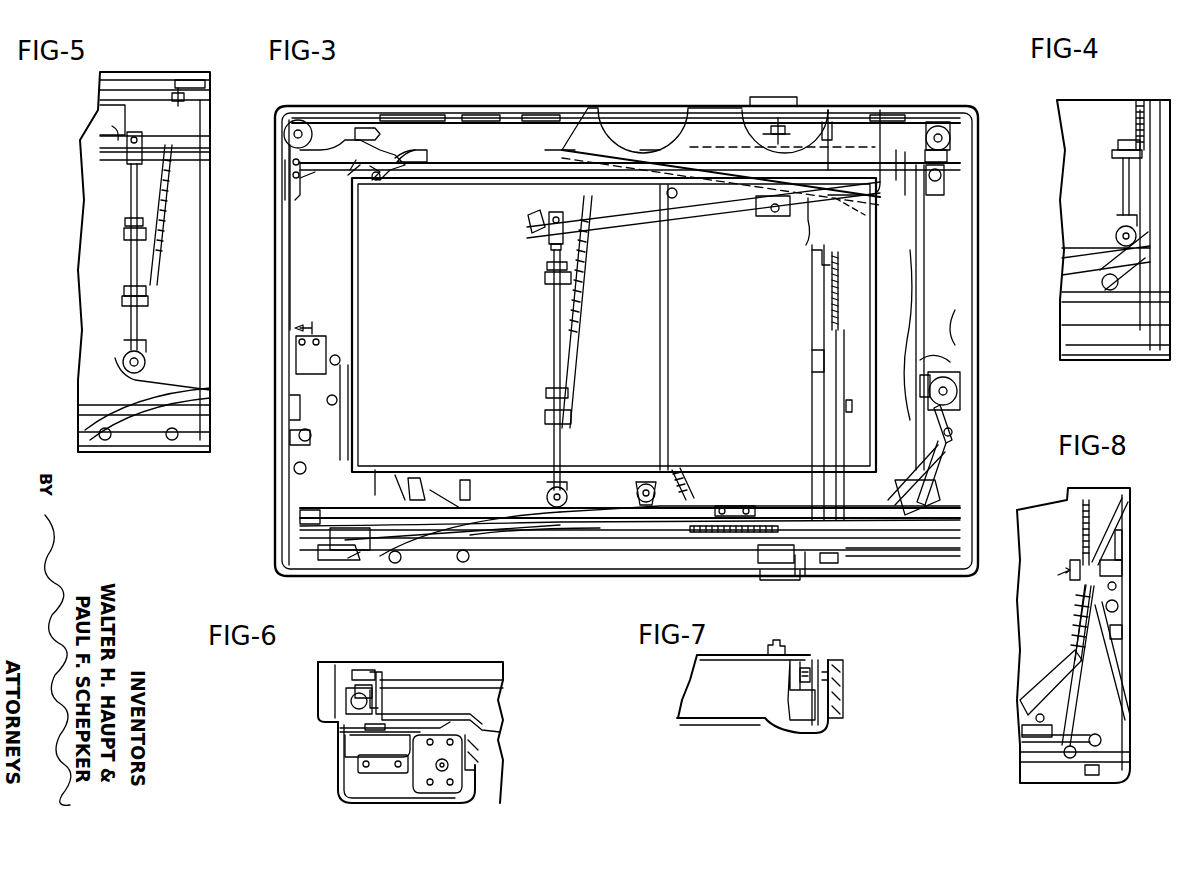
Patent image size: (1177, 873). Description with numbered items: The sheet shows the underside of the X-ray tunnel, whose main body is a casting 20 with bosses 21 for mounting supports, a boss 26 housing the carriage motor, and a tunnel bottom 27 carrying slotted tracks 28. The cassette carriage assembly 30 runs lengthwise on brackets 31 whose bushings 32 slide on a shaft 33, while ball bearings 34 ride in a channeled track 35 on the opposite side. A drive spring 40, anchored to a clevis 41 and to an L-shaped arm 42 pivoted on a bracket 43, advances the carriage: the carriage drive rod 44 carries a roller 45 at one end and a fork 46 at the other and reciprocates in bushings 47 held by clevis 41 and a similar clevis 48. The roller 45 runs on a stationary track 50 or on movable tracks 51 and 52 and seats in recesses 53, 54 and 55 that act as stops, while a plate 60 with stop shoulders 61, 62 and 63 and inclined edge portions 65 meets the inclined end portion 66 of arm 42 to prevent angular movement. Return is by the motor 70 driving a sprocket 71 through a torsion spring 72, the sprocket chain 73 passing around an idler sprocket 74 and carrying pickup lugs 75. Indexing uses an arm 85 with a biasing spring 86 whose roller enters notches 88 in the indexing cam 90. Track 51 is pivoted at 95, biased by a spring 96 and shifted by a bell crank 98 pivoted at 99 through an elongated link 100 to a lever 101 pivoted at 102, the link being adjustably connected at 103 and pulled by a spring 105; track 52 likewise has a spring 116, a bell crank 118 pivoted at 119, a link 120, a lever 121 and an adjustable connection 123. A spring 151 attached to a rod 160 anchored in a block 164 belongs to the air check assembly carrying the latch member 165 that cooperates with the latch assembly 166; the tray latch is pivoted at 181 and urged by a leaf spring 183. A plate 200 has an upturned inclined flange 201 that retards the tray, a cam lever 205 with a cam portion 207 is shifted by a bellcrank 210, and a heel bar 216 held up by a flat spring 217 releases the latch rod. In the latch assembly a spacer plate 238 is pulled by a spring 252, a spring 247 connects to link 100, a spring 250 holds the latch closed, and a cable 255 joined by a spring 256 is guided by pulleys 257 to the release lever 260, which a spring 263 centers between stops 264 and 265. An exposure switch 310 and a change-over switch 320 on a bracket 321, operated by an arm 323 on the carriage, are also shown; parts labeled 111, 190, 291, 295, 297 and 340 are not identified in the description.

In FIG. 3, the casting 20 is at (555, 110).
In FIG. 5, the casting 20 is at (203, 74).
In FIG. 4, the casting 20 is at (1140, 355).
In FIG. 8, the casting 20 is at (1130, 500).
In FIG. 6, the casting 20 is at (445, 660).
In FIG. 7, the casting 20 is at (830, 700).
In FIG. 3, the bosses 21 is at (780, 98).
In FIG. 6, the bosses 21 is at (330, 686).
In FIG. 7, the bosses 21 is at (845, 682).
In FIG. 6, the boss 26 is at (336, 786).
In FIG. 7, the tunnel bottom 27 is at (813, 660).
In FIG. 7, the slotted tracks 28 is at (775, 640).
In FIG. 3, the cassette carriage assembly 30 is at (536, 349).
In FIG. 5, the cassette carriage assembly 30 is at (205, 198).
In FIG. 4, the cassette carriage assembly 30 is at (1150, 132).
In FIG. 6, the cassette carriage assembly 30 is at (462, 688).
In FIG. 7, the cassette carriage assembly 30 is at (800, 705).
In FIG. 3, the brackets 31 is at (805, 576).
In FIG. 3, the bushings 32 is at (317, 377).
In FIG. 3, the shaft 33 is at (836, 565).
In FIG. 8, the shaft 33 is at (1085, 762).
In FIG. 6, the shaft 33 is at (350, 692).
In FIG. 3, the ball bearings 34 is at (775, 124).
In FIG. 5, the ball bearings 34 is at (176, 92).
In FIG. 7, the ball bearings 34 is at (804, 666).
In FIG. 3, the channeled track 35 is at (490, 123).
In FIG. 5, the channeled track 35 is at (210, 84).
In FIG. 7, the channeled track 35 is at (826, 675).
In FIG. 3, the drive spring 40 is at (588, 265).
In FIG. 5, the drive spring 40 is at (160, 222).
In FIG. 4, the drive spring 40 is at (1140, 100).
In FIG. 3, the clevis 41 is at (545, 418).
In FIG. 5, the clevis 41 is at (122, 300).
In FIG. 4, the clevis 41 is at (1118, 144).
In FIG. 3, the L-shaped arm 42 is at (532, 230).
In FIG. 5, the L-shaped arm 42 is at (205, 152).
In FIG. 3, the bracket 43 is at (740, 196).
In FIG. 3, the carriage drive rod 44 is at (553, 310).
In FIG. 5, the carriage drive rod 44 is at (130, 318).
In FIG. 4, the carriage drive rod 44 is at (1123, 178).
In FIG. 3, the roller 45 is at (547, 490).
In FIG. 5, the roller 45 is at (124, 355).
In FIG. 4, the roller 45 is at (1116, 232).
In FIG. 3, the fork 46 is at (556, 214).
In FIG. 5, the fork 46 is at (128, 150).
In FIG. 3, the bushings 47 is at (545, 278).
In FIG. 5, the bushings 47 is at (124, 234).
In FIG. 4, the bushings 47 is at (1112, 150).
In FIG. 3, the clevis 48 is at (547, 266).
In FIG. 5, the clevis 48 is at (126, 222).
In FIG. 3, the stationary track 50 is at (385, 550).
In FIG. 5, the stationary track 50 is at (95, 410).
In FIG. 4, the stationary track 50 is at (1118, 255).
In FIG. 3, the movable track 51 is at (450, 490).
In FIG. 5, the movable track 51 is at (128, 376).
In FIG. 4, the movable track 51 is at (1085, 290).
In FIG. 3, the movable track 52 is at (360, 560).
In FIG. 5, the movable track 52 is at (145, 440).
In FIG. 3, the recess 53 is at (350, 538).
In FIG. 3, the recess 54 is at (420, 476).
In FIG. 3, the recess 55 is at (362, 552).
In FIG. 3, the plate 60 is at (330, 142).
In FIG. 5, the plate 60 is at (103, 112).
In FIG. 3, the stop shoulder 61 is at (410, 160).
In FIG. 5, the stop shoulder 61 is at (112, 136).
In FIG. 3, the stop shoulder 62 is at (352, 172).
In FIG. 3, the stop shoulder 63 is at (300, 190).
In FIG. 3, the inclined edge portion 65 is at (412, 150).
In FIG. 3, the inclined end portion 66 is at (530, 215).
In FIG. 3, the motor 70 is at (935, 480).
In FIG. 8, the motor 70 is at (1046, 698).
In FIG. 6, the motor 70 is at (448, 782).
In FIG. 3, the sprocket 71 is at (862, 558).
In FIG. 8, the sprocket 71 is at (1022, 740).
In FIG. 6, the sprocket 71 is at (345, 728).
In FIG. 6, the torsion spring 72 is at (370, 730).
In FIG. 3, the sprocket chain 73 is at (402, 475).
In FIG. 3, the idler sprocket 74 is at (300, 516).
In FIG. 3, the pickup lugs 75 is at (378, 468).
In FIG. 3, the arm 85 is at (925, 368).
In FIG. 3, the biasing spring 86 is at (920, 385).
In FIG. 3, the notches 88 is at (962, 378).
In FIG. 3, the indexing cam 90 is at (958, 392).
In FIG. 8, the indexing cam 90 is at (1120, 606).
In FIG. 3, the pivot 95 is at (640, 485).
In FIG. 3, the spring 96 is at (668, 490).
In FIG. 3, the bell crank 98 is at (480, 540).
In FIG. 3, the pivot 99 is at (463, 562).
In FIG. 3, the elongated link 100 is at (620, 540).
In FIG. 5, the elongated link 100 is at (193, 435).
In FIG. 4, the elongated link 100 is at (1105, 328).
In FIG. 8, the elongated link 100 is at (1022, 755).
In FIG. 6, the elongated link 100 is at (360, 668).
In FIG. 8, the lever 101 is at (1090, 680).
In FIG. 6, the lever 101 is at (385, 676).
In FIG. 3, the pivot 102 is at (952, 435).
In FIG. 3, the adjustable connection 103 is at (762, 560).
In FIG. 3, the spring 105 is at (700, 534).
In FIG. 3, the stop 111 is at (853, 404).
In FIG. 3, the spring 116 is at (690, 475).
In FIG. 3, the bell crank 118 is at (340, 560).
In FIG. 3, the pivot 119 is at (398, 563).
In FIG. 3, the elongated link 120 is at (580, 545).
In FIG. 5, the elongated link 120 is at (85, 420).
In FIG. 4, the elongated link 120 is at (1064, 305).
In FIG. 8, the elongated link 120 is at (1022, 735).
In FIG. 6, the elongated link 120 is at (366, 684).
In FIG. 3, the lever 121 is at (912, 478).
In FIG. 8, the lever 121 is at (1075, 662).
In FIG. 6, the lever 121 is at (372, 700).
In FIG. 3, the adjustable connection 123 is at (742, 506).
In FIG. 3, the spring 151 is at (840, 286).
In FIG. 3, the rod 160 is at (815, 296).
In FIG. 3, the block 164 is at (812, 277).
In FIG. 3, the latch member 165 is at (817, 362).
In FIG. 8, the latch assembly 166 is at (1060, 566).
In FIG. 3, the pivot 181 is at (798, 214).
In FIG. 3, the leaf spring 183 is at (808, 202).
In FIG. 3, the latch plate 190 is at (370, 126).
In FIG. 3, the plate 200 is at (852, 120).
In FIG. 3, the upturned inclined flange 201 is at (864, 217).
In FIG. 3, the lever 205 is at (938, 228).
In FIG. 3, the cam portion 207 is at (912, 172).
In FIG. 3, the bellcrank 210 is at (960, 335).
In FIG. 3, the heel bar 216 is at (728, 168).
In FIG. 3, the flat spring 217 is at (652, 112).
In FIG. 8, the spacer plate 238 is at (1112, 572).
In FIG. 8, the spring 247 is at (1076, 620).
In FIG. 8, the spring 250 is at (1124, 635).
In FIG. 8, the spring 252 is at (1124, 545).
In FIG. 3, the cable 255 is at (288, 300).
In FIG. 8, the cable 255 is at (1082, 510).
In FIG. 8, the spring 256 is at (1085, 545).
In FIG. 3, the pulleys 257 is at (292, 128).
In FIG. 3, the release lever 260 is at (348, 358).
In FIG. 3, the spring 263 is at (290, 400).
In FIG. 3, the stop 264 is at (356, 335).
In FIG. 3, the stop 265 is at (345, 402).
In FIG. 3, the block 291 is at (472, 482).
In FIG. 3, the slide bar 295 is at (352, 385).
In FIG. 3, the roller 297 is at (294, 465).
In FIG. 3, the exposure switch 310 is at (296, 360).
In FIG. 3, the change-over switch 320 is at (950, 140).
In FIG. 3, the bracket 321 is at (950, 170).
In FIG. 3, the arm 323 is at (828, 118).
In FIG. 3, the lever 340 is at (290, 435).